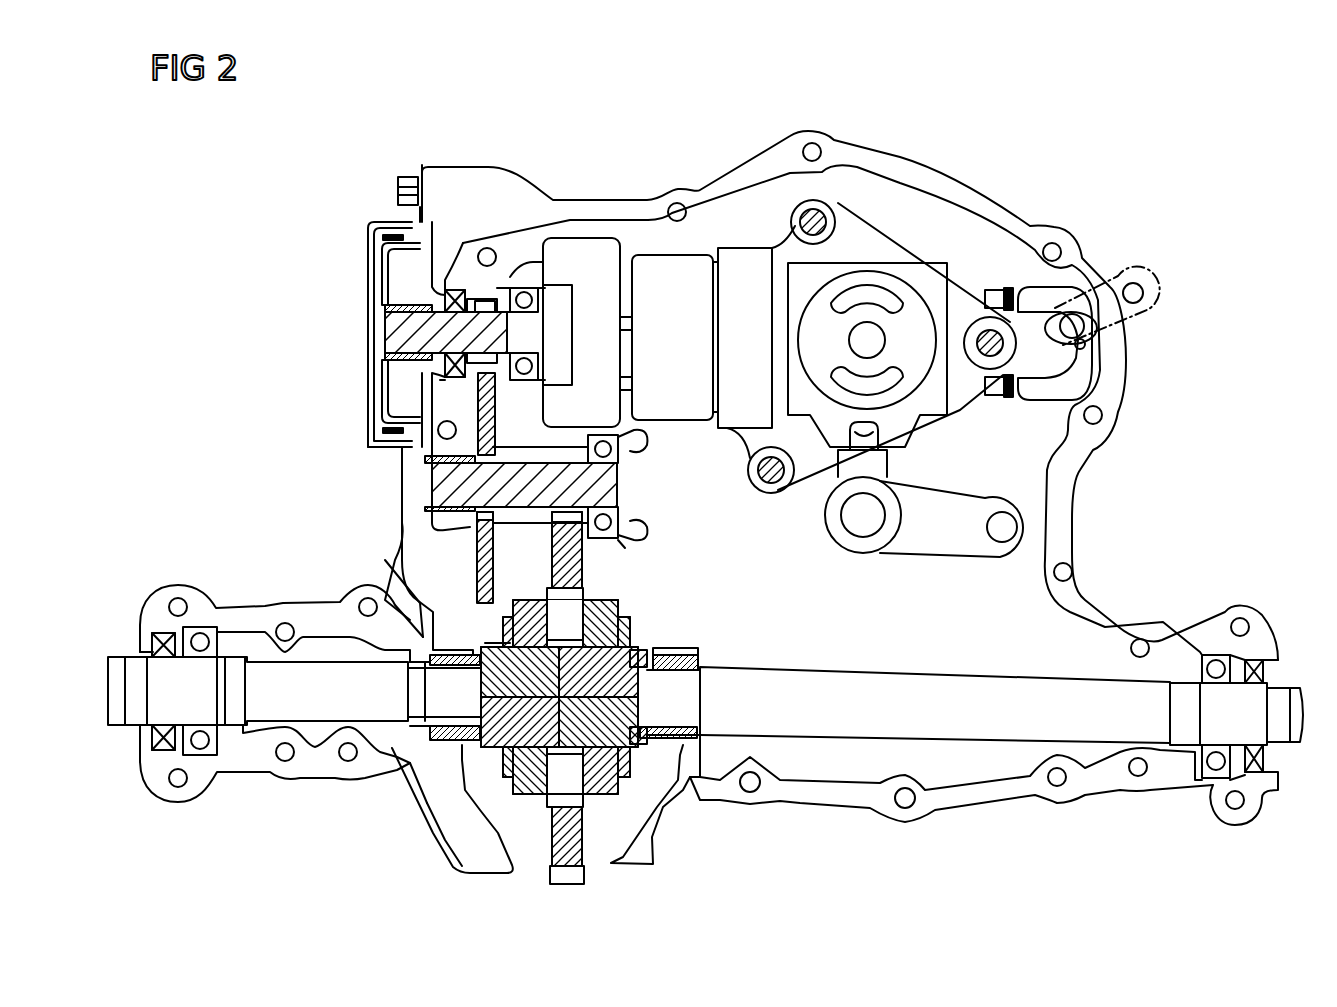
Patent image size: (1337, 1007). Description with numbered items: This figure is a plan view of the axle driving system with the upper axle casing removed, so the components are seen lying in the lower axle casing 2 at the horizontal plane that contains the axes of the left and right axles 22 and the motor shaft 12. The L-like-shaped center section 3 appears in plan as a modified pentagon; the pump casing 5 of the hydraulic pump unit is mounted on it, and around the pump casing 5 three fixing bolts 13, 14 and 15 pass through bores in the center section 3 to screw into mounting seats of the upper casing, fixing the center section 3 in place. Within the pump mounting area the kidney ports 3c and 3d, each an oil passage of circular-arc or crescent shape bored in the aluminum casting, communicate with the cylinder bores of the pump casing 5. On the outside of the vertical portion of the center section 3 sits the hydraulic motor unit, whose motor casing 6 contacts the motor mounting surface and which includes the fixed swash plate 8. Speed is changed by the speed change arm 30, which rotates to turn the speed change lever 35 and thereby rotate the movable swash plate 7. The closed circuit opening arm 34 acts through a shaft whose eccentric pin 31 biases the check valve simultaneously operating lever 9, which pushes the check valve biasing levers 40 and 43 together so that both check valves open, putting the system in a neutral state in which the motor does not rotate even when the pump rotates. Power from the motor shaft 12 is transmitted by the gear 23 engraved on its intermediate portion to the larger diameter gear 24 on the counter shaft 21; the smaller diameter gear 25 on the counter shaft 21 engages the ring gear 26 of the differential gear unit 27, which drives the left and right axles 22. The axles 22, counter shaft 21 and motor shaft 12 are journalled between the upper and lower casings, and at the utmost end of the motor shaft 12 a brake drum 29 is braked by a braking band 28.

The lower axle casing 2 is at (806, 596).
The L-like-shaped center section 3 is at (773, 246).
The kidney port 3c is at (850, 302).
The kidney port 3d is at (848, 381).
The pump casing 5 is at (898, 292).
The motor casing 6 is at (686, 422).
The movable swash plate 7 is at (962, 265).
The fixed swash plate 8 is at (593, 245).
The check valve simultaneously operating lever 9 is at (1056, 394).
The motor shaft 12 is at (390, 330).
The fixing bolt 13 is at (1016, 343).
The fixing bolt 14 is at (823, 213).
The fixing bolt 15 is at (775, 490).
The counter shaft 21 is at (598, 497).
The axles 22 is at (322, 708).
The gear 23 is at (483, 298).
The larger diameter gear 24 is at (497, 422).
The smaller diameter gear 25 is at (537, 514).
The ring gear 26 is at (582, 565).
The differential gear unit 27 is at (654, 628).
The braking band 28 is at (368, 240).
The brake drum 29 is at (385, 273).
The speed change arm 30 is at (996, 500).
The eccentric pin 31 is at (1080, 349).
The closed circuit opening arm 34 is at (1143, 304).
The speed change lever 35 is at (886, 450).
The check valve biasing lever 40 is at (1013, 400).
The check valve biasing lever 43 is at (1010, 289).